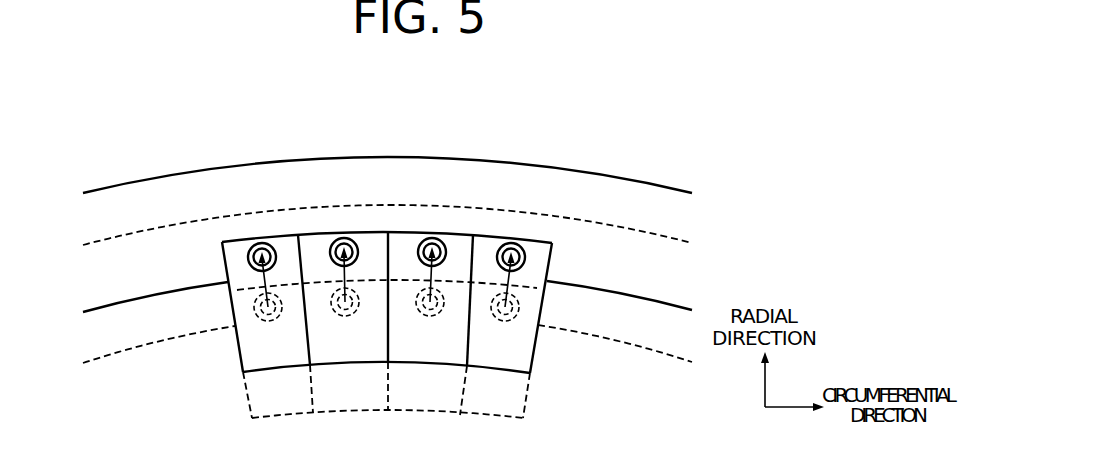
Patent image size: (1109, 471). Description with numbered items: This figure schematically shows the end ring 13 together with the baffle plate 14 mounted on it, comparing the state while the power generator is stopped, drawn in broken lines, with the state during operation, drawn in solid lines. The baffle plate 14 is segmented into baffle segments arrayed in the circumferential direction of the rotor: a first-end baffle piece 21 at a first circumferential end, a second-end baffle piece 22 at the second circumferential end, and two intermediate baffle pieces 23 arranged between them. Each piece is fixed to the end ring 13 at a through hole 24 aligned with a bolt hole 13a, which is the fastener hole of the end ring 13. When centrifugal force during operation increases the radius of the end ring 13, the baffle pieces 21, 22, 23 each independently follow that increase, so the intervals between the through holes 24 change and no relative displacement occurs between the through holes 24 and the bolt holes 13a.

The end ring 13 is at (120, 205).
The bolt hole 13a is at (522, 253).
The baffle plate 14 is at (256, 345).
The first-end baffle piece 21 is at (232, 238).
The second-end baffle piece 22 is at (487, 232).
The intermediate baffle piece 23 is at (310, 233).
The through hole 24 is at (515, 249).